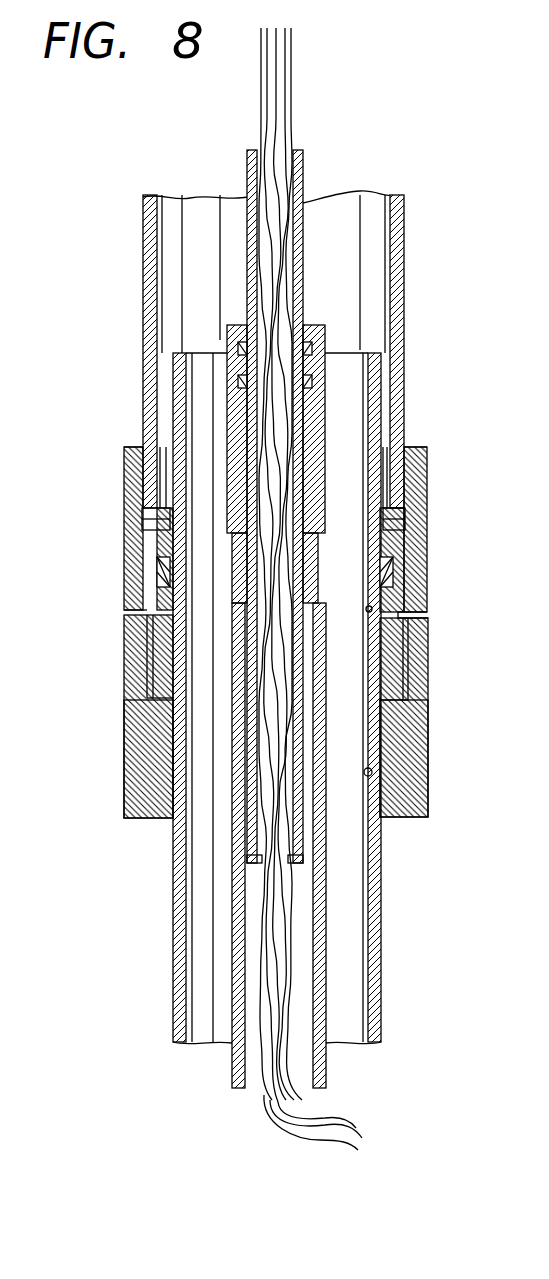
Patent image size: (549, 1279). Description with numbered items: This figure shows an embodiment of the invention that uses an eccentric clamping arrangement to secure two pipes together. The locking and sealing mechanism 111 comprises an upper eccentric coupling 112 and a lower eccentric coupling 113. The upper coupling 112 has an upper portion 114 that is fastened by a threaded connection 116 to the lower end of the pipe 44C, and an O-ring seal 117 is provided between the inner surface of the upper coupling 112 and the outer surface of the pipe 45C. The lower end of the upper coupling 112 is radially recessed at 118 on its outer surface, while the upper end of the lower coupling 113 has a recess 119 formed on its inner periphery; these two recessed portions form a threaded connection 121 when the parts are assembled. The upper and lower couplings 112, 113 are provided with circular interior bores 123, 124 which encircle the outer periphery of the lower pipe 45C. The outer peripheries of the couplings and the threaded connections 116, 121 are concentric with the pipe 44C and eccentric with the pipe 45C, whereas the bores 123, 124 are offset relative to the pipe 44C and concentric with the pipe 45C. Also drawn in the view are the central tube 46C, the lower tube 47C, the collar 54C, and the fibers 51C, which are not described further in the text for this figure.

The pipe 44C is at (405, 203).
The pipe 45C is at (390, 966).
The fiber guide tube 46C is at (305, 157).
The lower tube 47C is at (340, 1075).
The optical fibers 51C is at (333, 590).
The collar 54C is at (323, 316).
The locking and sealing mechanism 111 is at (104, 645).
The upper eccentric coupling 112 is at (108, 492).
The lower eccentric coupling 113 is at (104, 749).
The upper portion 114 is at (120, 452).
The threaded connection 116 is at (155, 447).
The O-ring seal 117 is at (152, 572).
The radially recessed portion 118 is at (428, 614).
The recess 119 is at (380, 702).
The threaded connection 121 is at (428, 657).
The interior bore 123 is at (372, 605).
The interior bore 124 is at (372, 778).